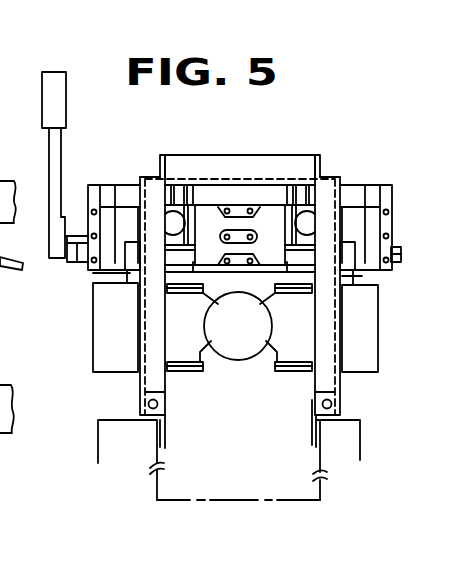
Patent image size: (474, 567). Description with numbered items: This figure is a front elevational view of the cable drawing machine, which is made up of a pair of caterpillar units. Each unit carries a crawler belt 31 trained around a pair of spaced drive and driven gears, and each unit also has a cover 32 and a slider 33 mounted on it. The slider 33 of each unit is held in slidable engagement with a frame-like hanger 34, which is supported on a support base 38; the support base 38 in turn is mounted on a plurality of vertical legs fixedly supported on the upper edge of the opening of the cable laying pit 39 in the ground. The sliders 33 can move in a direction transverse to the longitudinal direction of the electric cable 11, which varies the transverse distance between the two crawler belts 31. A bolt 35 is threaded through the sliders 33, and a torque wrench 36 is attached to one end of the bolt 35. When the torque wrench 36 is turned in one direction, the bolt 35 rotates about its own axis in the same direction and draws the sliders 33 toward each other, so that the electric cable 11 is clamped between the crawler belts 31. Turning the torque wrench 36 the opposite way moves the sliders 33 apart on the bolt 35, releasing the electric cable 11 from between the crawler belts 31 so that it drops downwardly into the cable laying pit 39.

The electric cable 11 is at (263, 338).
The crawler belt 31 is at (275, 357).
The cover 32 is at (103, 352).
The slider 33 is at (95, 273).
The frame-like hanger 34 is at (368, 193).
The bolt 35 is at (399, 250).
The torque wrench 36 is at (44, 97).
The support base 38 is at (185, 165).
The cable laying pit 39 is at (197, 433).